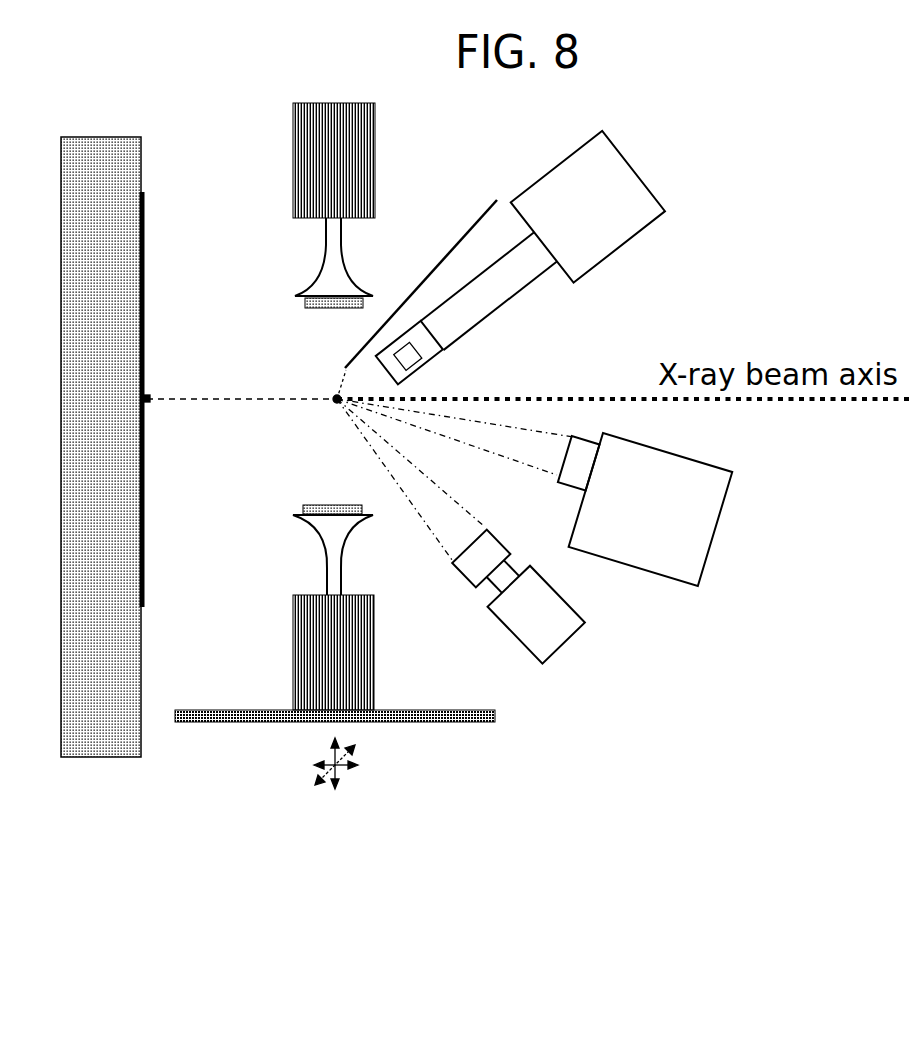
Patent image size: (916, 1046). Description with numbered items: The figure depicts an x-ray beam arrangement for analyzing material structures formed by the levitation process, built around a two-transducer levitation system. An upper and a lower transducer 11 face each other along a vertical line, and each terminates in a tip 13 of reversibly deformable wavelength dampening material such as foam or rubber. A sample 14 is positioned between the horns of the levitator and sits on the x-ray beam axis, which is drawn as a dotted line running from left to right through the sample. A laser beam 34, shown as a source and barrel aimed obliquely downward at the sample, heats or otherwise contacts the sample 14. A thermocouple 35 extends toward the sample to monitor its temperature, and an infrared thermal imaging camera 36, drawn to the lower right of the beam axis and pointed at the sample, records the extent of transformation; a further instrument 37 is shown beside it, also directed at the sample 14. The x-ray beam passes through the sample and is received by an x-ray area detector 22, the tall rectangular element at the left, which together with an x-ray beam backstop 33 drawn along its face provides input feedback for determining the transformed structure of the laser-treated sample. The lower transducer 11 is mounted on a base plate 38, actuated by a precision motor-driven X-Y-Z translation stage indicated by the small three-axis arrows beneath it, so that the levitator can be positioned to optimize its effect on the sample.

The transducer 11 is at (303, 177).
The tip of the transducer 13 is at (332, 305).
The sample 14 is at (335, 401).
The x-ray area detector 22 is at (93, 145).
The beam stop 33 is at (145, 560).
The laser beam 34 is at (637, 200).
The thermocouple 35 is at (453, 245).
The infrared thermal imaging camera 36 is at (700, 518).
The detector 37 is at (557, 652).
The base plate 38 is at (458, 722).